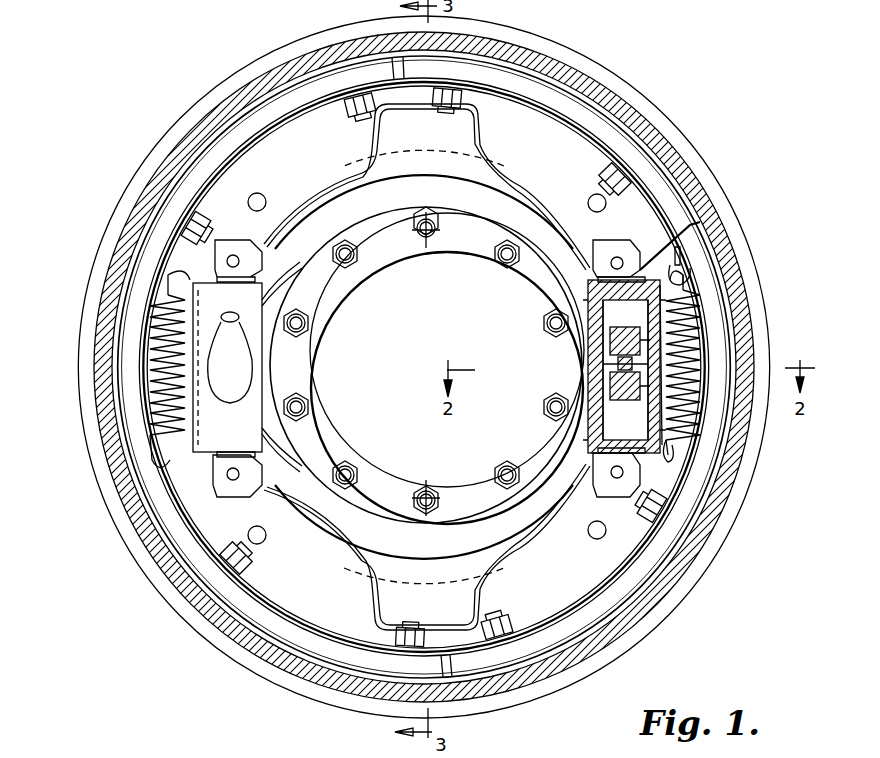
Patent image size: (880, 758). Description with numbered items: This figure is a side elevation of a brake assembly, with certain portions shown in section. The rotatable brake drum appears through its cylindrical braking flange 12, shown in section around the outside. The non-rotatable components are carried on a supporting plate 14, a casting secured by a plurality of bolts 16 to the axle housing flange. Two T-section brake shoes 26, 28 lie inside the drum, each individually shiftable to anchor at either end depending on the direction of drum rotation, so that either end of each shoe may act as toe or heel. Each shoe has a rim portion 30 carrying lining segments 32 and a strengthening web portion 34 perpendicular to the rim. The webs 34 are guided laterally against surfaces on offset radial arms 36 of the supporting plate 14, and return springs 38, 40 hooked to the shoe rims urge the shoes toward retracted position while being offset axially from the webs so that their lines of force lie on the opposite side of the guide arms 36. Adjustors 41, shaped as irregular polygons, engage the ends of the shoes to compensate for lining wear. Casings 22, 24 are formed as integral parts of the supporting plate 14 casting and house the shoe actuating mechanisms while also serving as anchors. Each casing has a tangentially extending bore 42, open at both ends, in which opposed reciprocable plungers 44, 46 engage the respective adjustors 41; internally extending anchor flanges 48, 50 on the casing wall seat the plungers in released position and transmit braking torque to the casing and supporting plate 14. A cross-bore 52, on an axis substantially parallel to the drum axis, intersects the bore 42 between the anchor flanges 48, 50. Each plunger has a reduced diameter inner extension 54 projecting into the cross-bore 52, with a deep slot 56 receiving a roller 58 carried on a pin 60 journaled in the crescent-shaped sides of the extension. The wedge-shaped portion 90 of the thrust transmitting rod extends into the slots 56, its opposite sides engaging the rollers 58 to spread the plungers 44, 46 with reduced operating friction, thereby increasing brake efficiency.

The cylindrical braking flange 12 is at (673, 150).
The supporting plate 14 is at (350, 212).
The bolts 16 is at (410, 235).
The casing 22 is at (193, 292).
The casing 24 is at (670, 280).
The brake shoe 26 is at (583, 150).
The brake shoe 28 is at (600, 575).
The rim portion 30 is at (578, 125).
The lining segments 32 is at (565, 100).
The web portion 34 is at (297, 128).
The offset radial arms 36 is at (483, 110).
The return spring 38 is at (153, 377).
The return spring 40 is at (690, 320).
The adjustors 41 is at (640, 200).
The tangentially extending bore 42 is at (668, 320).
The plunger 44 is at (690, 258).
The plunger 46 is at (657, 430).
The anchor flange 48 is at (610, 347).
The anchor flange 50 is at (610, 397).
The cross-bore 52 is at (662, 335).
The reduced diameter inner extension 54 is at (645, 345).
The slot 56 is at (583, 245).
The roller 58 is at (583, 300).
The pin 60 is at (680, 290).
The wedge-shaped portion 90 is at (614, 370).